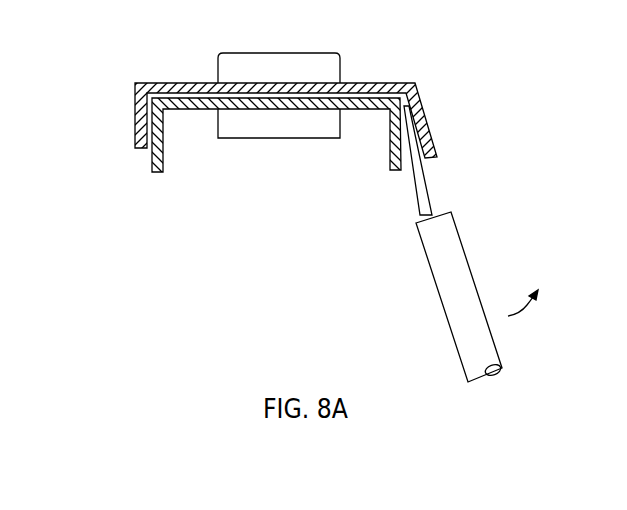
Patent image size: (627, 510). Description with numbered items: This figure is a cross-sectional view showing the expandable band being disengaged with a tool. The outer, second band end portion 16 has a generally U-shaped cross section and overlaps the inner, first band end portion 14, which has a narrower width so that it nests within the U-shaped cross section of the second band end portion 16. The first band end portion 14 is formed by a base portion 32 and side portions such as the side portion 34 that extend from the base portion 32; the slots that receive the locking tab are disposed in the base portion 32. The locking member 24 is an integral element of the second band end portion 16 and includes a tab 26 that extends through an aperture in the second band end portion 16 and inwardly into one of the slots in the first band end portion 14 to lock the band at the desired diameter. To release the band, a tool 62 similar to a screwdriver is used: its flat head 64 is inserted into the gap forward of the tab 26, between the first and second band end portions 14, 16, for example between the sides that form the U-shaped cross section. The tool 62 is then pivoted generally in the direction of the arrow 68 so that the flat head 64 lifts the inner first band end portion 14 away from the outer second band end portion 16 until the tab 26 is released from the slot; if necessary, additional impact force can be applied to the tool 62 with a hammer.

The first band end portion 14 is at (390, 112).
The second band end portion 16 is at (428, 98).
The locking member 24 is at (272, 53).
The tab 26 is at (272, 139).
The base portion 32 is at (178, 112).
The side portion 34 is at (153, 165).
The tool 62 is at (467, 262).
The flat head 64 is at (427, 190).
The arrow 68 is at (525, 312).